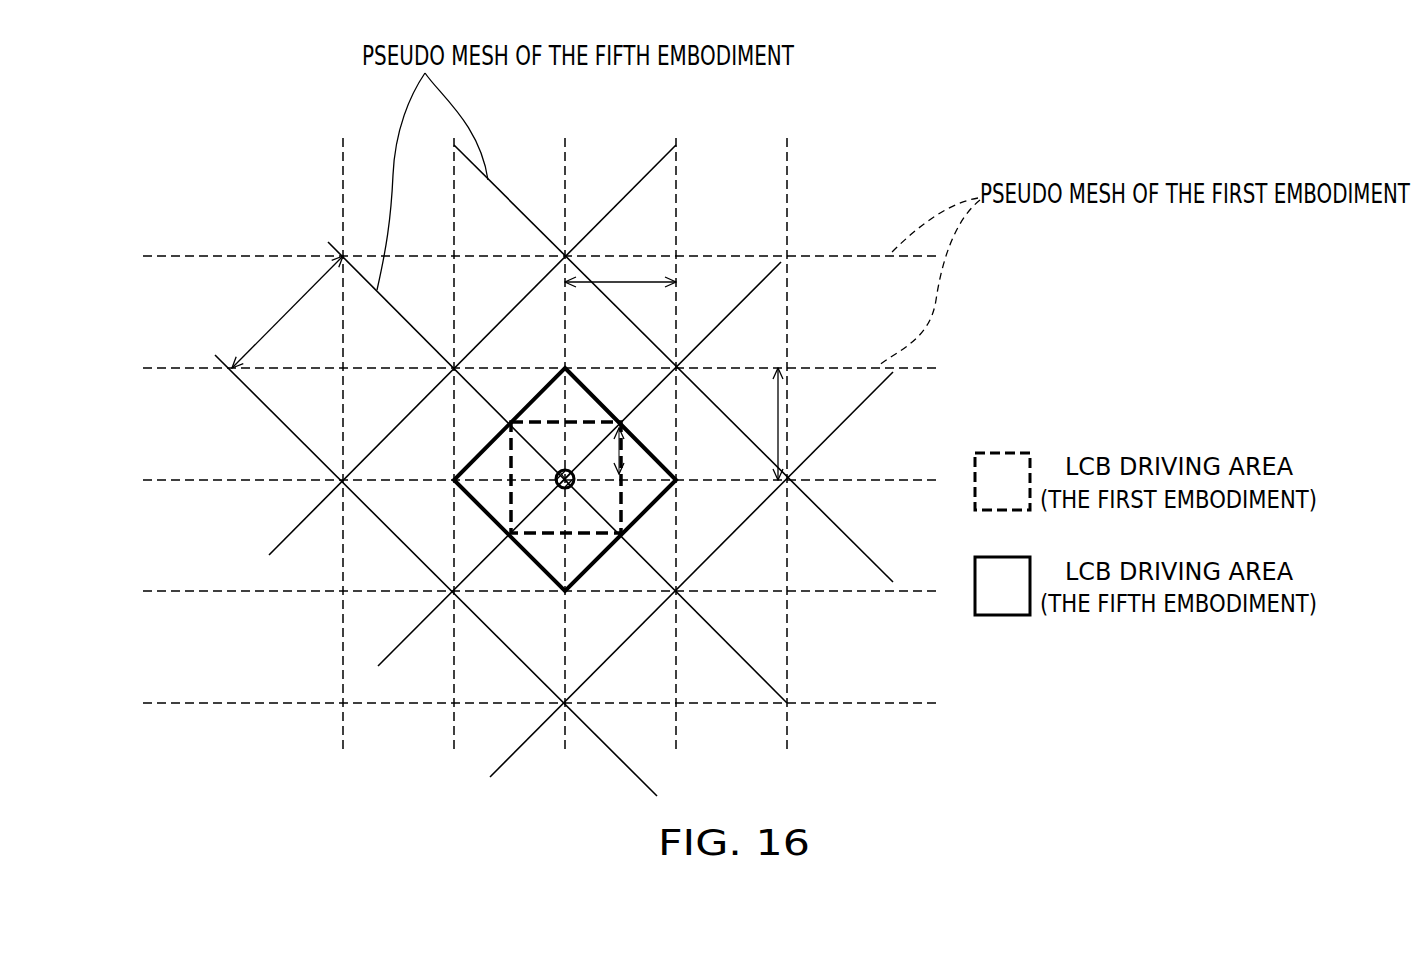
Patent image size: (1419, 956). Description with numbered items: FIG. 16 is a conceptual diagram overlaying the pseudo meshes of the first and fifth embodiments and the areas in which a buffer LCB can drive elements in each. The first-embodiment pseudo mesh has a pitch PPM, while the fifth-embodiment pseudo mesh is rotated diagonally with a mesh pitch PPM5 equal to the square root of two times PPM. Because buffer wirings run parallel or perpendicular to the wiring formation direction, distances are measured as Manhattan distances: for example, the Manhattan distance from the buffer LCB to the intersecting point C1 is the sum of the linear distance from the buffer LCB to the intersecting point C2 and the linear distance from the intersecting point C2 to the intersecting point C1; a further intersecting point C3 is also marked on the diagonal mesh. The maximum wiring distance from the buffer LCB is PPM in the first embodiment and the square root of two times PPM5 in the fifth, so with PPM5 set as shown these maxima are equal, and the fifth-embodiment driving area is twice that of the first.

The intersecting point C1 is at (640, 399).
The intersecting point C2 is at (628, 476).
The vertex of LCB driving area of the fifth embodiment C3 is at (681, 475).
The buffer LCB is at (570, 468).
The pitch of the pseudo mesh of the first embodiment PPM is at (630, 280).
The mesh pitch of the pseudo mesh of the fifth embodiment PPM5 is at (282, 313).